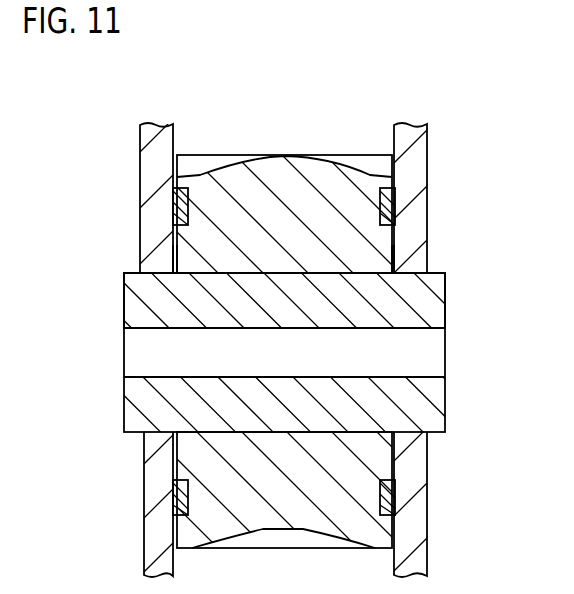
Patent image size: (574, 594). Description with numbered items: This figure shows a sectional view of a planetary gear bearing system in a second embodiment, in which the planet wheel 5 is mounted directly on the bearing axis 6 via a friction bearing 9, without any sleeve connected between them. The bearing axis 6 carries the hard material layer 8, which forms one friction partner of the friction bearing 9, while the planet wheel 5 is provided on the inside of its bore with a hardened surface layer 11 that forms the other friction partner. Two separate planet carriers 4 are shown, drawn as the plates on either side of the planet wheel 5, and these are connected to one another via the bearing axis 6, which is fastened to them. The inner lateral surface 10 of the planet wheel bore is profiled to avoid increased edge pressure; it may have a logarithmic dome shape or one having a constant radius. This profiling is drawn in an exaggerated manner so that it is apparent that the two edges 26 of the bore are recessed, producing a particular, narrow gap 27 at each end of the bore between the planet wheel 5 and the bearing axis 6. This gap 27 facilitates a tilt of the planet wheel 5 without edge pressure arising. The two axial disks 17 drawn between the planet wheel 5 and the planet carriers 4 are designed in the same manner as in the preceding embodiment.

The planet carrier 4 is at (155, 171).
The planet wheel 5 is at (267, 170).
The bearing axis 6 is at (418, 300).
The hard material layer 8 is at (250, 273).
The friction bearing 9 is at (219, 285).
The inner lateral surface 10 is at (240, 273).
The hardened surface layer 11 is at (318, 262).
The axial disk 17 is at (176, 205).
The edge 26 is at (173, 247).
The gap 27 is at (162, 261).